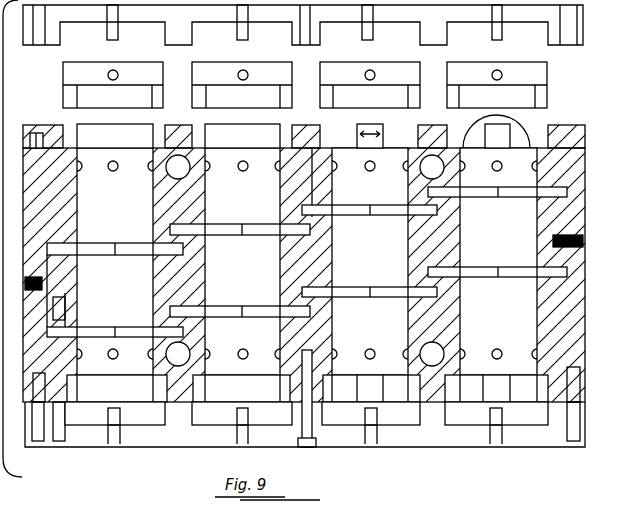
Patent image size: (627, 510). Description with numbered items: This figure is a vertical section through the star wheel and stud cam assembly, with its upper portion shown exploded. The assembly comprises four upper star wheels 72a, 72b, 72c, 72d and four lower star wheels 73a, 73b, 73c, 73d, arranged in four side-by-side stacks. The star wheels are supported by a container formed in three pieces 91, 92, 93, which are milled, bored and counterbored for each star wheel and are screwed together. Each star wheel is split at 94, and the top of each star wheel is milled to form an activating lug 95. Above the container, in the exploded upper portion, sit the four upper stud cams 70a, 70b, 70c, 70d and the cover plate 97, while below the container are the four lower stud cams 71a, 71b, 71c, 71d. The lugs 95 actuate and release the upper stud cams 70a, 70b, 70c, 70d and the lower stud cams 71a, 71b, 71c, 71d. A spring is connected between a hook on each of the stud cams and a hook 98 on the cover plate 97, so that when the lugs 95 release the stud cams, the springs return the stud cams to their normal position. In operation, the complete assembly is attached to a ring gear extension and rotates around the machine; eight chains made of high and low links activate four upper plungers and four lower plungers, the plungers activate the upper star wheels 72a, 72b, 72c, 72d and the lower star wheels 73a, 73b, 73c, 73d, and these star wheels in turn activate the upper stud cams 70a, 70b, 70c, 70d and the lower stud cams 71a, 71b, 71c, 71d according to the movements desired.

The upper stud cam 70a is at (527, 88).
The upper stud cam 70b is at (383, 93).
The upper stud cam 70c is at (262, 93).
The upper stud cam 70d is at (131, 95).
The lower stud cam 71a is at (472, 424).
The lower stud cam 71b is at (407, 426).
The lower stud cam 71c is at (208, 427).
The lower stud cam 71d is at (138, 427).
The upper star wheel 72a is at (517, 194).
The upper star wheel 72b is at (390, 209).
The upper star wheel 72c is at (267, 231).
The upper star wheel 72d is at (133, 248).
The lower star wheel 73a is at (517, 278).
The lower star wheel 73b is at (393, 298).
The lower star wheel 73c is at (253, 314).
The lower star wheel 73d is at (130, 328).
The container piece 91 is at (52, 203).
The container piece 92 is at (70, 275).
The container piece 93 is at (58, 378).
The split 94 is at (103, 263).
The activating lug 95 is at (87, 128).
The cover plate 97 is at (533, 22).
The hook 98 is at (107, 32).